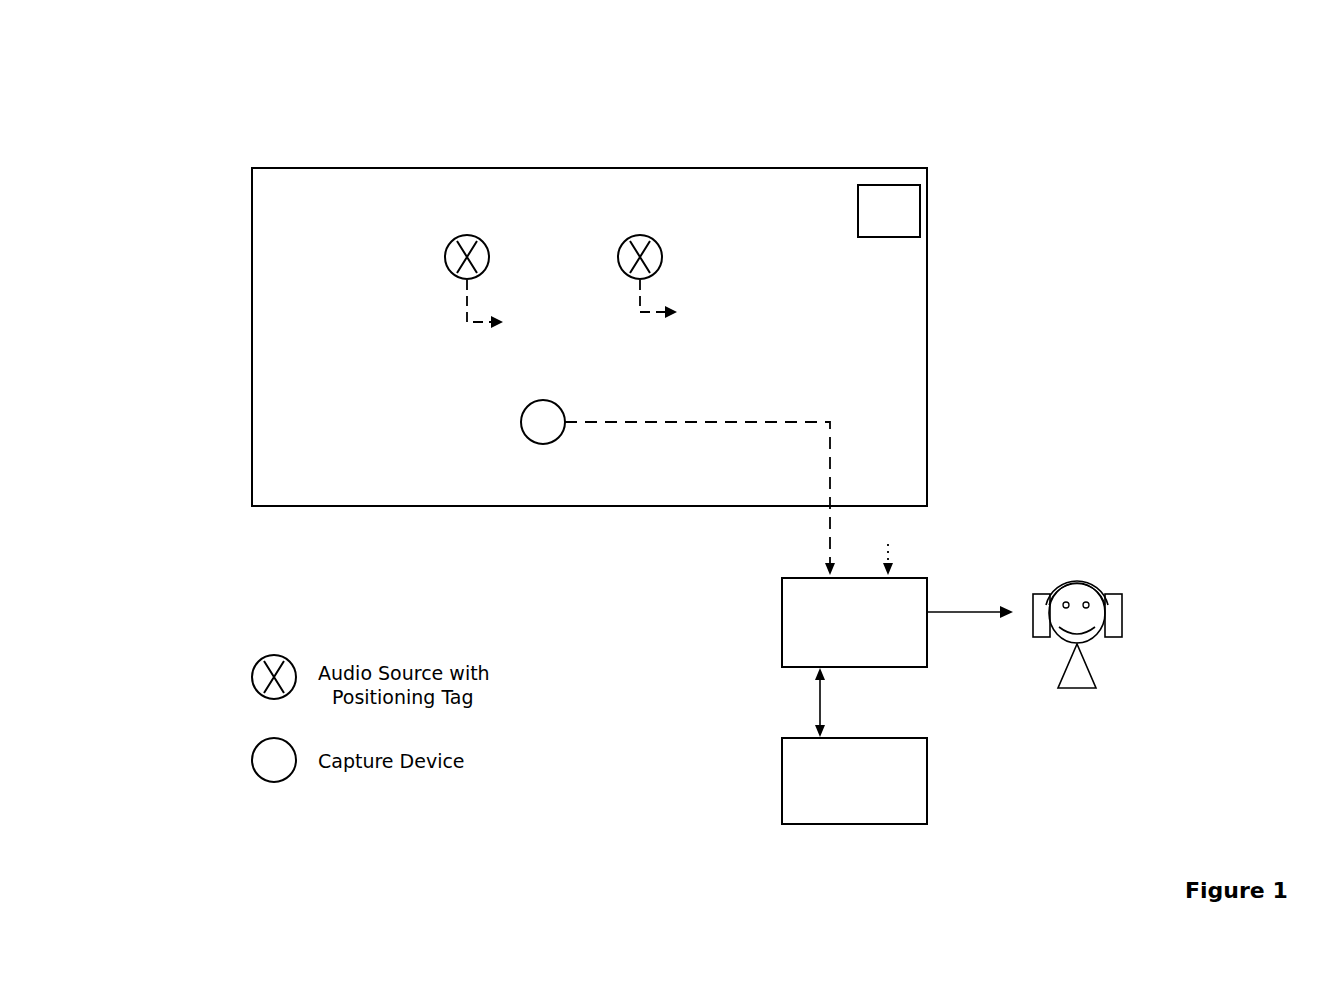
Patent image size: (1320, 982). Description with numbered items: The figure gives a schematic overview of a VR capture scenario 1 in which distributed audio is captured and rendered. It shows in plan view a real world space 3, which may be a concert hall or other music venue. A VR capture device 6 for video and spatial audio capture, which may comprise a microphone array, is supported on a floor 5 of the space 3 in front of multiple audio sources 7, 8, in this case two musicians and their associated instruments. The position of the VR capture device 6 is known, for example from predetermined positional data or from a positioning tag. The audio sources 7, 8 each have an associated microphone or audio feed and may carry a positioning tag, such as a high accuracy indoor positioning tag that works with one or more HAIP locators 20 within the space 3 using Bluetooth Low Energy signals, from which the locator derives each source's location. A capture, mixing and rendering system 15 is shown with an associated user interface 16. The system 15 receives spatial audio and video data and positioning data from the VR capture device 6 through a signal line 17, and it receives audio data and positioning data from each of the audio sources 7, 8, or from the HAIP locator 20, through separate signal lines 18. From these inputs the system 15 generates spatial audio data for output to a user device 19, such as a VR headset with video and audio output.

The VR capture scenario 1 is at (221, 130).
The real world space 3 is at (929, 478).
The floor 5 is at (330, 481).
The VR capture device 6 is at (545, 445).
The audio source 7 is at (467, 235).
The audio source 8 is at (640, 235).
The capture, mixing and rendering system 15 is at (782, 637).
The user interface 16 is at (927, 781).
The signal line 17 is at (829, 540).
The signal lines 18 is at (462, 306).
The user device 19 is at (1082, 567).
The HAIP locator 20 is at (887, 185).